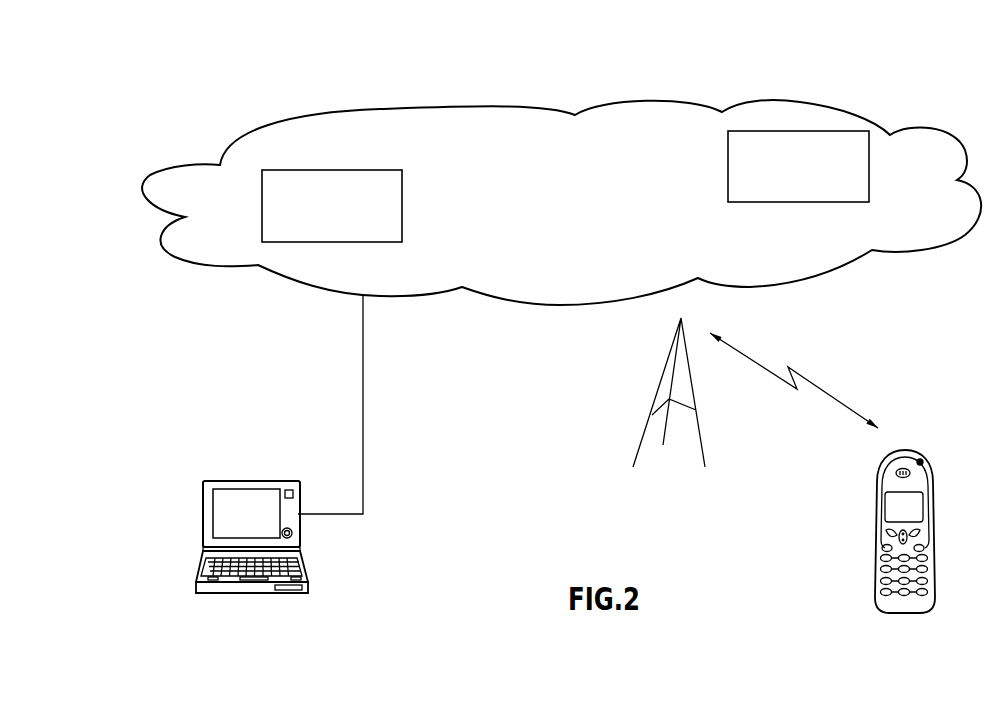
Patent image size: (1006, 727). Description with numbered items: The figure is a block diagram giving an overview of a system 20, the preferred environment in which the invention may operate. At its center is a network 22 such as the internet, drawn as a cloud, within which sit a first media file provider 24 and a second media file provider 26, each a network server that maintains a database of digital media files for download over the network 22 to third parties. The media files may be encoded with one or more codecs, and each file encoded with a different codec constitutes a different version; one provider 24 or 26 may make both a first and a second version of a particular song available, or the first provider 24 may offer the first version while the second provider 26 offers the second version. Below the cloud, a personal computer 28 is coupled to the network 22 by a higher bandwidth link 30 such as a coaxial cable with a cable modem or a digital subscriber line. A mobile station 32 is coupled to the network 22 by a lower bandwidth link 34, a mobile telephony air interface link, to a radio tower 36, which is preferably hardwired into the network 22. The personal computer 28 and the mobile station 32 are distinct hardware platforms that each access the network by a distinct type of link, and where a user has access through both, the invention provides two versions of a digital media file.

The system 20 is at (287, 85).
The network 22 is at (510, 106).
The first media file provider 24 is at (728, 165).
The second media file provider 26 is at (403, 191).
The personal computer 28 is at (238, 480).
The higher bandwidth link 30 is at (363, 401).
The mobile station 32 is at (875, 506).
The lower bandwidth link 34 is at (828, 391).
The radio tower 36 is at (664, 372).